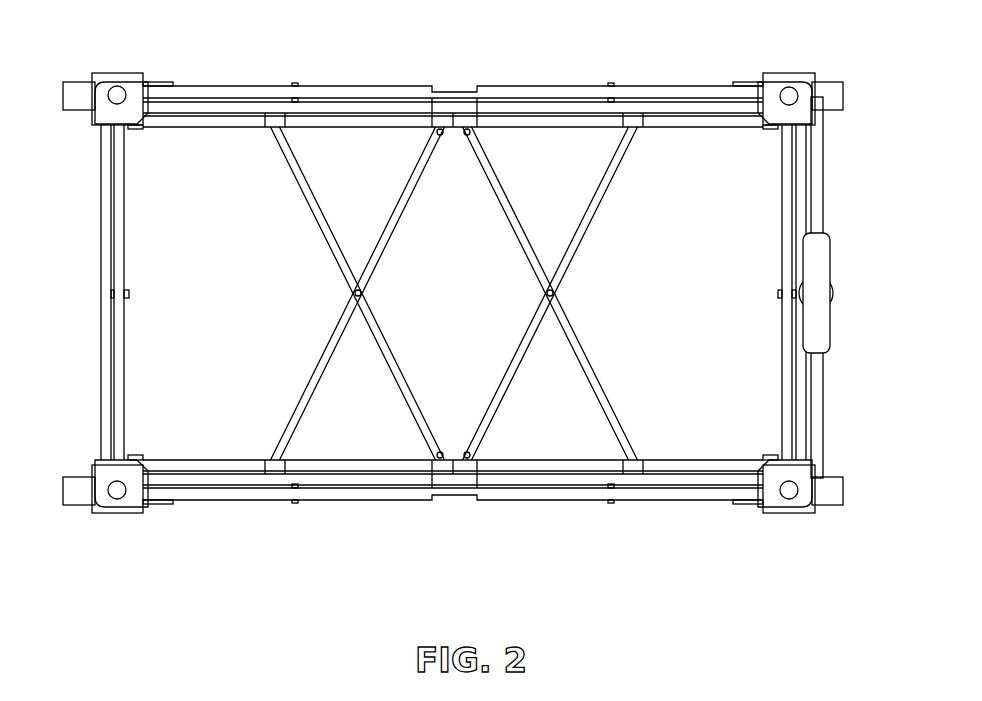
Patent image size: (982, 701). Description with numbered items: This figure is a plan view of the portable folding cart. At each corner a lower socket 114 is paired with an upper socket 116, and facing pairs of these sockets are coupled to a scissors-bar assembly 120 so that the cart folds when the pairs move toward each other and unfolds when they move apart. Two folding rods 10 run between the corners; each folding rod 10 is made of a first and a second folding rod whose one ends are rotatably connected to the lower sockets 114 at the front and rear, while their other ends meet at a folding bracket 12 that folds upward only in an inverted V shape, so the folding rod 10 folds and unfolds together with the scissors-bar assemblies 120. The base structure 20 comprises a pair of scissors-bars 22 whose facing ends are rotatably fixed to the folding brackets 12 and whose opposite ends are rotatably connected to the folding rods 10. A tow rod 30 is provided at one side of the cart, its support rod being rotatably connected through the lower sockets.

The folding rod 10 is at (427, 305).
The folding bracket 12 is at (429, 123).
The base structure 20 is at (402, 404).
The scissors-bar 22 is at (322, 420).
The tow rod 30 is at (832, 254).
The lower socket 114 is at (809, 516).
The upper socket 116 is at (756, 510).
The scissors-bar assembly 120 is at (92, 418).